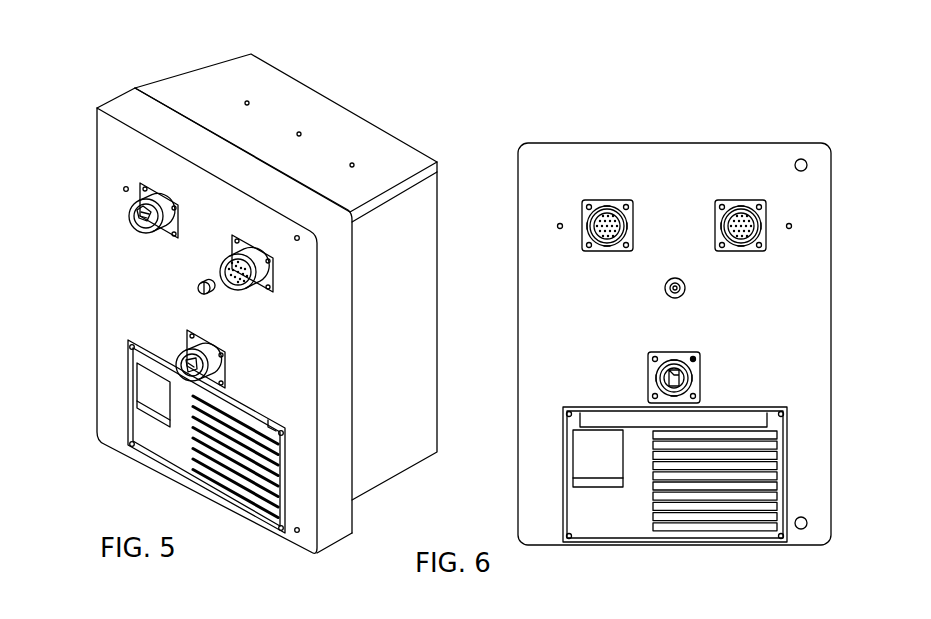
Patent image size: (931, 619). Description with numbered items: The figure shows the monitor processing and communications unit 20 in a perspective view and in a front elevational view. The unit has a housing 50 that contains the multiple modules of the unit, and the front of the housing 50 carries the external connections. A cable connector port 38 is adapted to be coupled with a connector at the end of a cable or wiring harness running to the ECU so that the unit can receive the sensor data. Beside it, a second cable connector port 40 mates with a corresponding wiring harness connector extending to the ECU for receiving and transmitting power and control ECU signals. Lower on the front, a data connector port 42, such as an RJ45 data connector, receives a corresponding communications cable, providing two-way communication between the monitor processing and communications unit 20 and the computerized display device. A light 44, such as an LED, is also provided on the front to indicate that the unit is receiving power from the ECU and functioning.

In FIG. 5, the monitor processing and communications unit 20 is at (72, 227).
In FIG. 6, the monitor processing and communications unit 20 is at (648, 128).
In FIG. 5, the cable connector port 38 is at (152, 203).
In FIG. 6, the cable connector port 38 is at (595, 220).
In FIG. 5, the second cable connector port 40 is at (257, 267).
In FIG. 6, the second cable connector port 40 is at (732, 205).
In FIG. 5, the data connector port 42 is at (190, 348).
In FIG. 6, the data connector port 42 is at (692, 375).
In FIG. 5, the light 44 is at (198, 284).
In FIG. 6, the light 44 is at (686, 290).
In FIG. 5, the housing 50 is at (413, 366).
In FIG. 6, the housing 50 is at (818, 393).